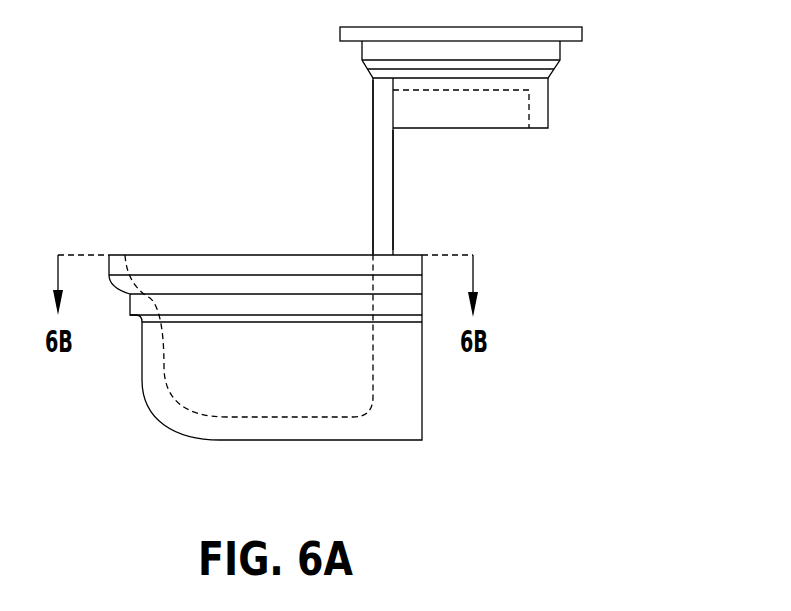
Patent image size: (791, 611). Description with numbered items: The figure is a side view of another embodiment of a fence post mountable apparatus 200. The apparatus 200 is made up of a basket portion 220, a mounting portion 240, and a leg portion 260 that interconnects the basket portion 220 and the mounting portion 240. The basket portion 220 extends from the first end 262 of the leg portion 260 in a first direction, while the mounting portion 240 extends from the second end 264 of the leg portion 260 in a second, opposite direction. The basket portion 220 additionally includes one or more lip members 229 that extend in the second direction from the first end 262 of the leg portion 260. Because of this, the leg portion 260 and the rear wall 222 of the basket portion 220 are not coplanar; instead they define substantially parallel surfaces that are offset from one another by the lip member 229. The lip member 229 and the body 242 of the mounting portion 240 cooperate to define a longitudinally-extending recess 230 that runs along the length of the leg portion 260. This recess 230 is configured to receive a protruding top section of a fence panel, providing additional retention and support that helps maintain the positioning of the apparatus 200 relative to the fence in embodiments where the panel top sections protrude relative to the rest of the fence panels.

The fence post mountable apparatus 200 is at (207, 147).
The mounting portion 240 is at (548, 52).
The body of mounting portion 242 is at (525, 84).
The leg portion 260 is at (373, 168).
The second end of leg portion 264 is at (373, 123).
The first end of leg portion 262 is at (373, 230).
The longitudinally-extending recess 230 is at (405, 190).
The lip member 229 is at (420, 255).
The rear wall of basket portion 222 is at (407, 410).
The basket portion 220 is at (160, 402).